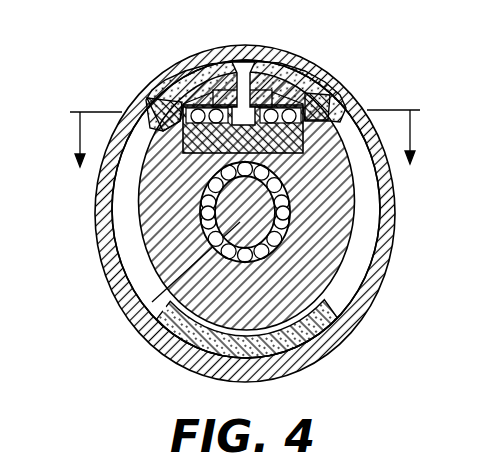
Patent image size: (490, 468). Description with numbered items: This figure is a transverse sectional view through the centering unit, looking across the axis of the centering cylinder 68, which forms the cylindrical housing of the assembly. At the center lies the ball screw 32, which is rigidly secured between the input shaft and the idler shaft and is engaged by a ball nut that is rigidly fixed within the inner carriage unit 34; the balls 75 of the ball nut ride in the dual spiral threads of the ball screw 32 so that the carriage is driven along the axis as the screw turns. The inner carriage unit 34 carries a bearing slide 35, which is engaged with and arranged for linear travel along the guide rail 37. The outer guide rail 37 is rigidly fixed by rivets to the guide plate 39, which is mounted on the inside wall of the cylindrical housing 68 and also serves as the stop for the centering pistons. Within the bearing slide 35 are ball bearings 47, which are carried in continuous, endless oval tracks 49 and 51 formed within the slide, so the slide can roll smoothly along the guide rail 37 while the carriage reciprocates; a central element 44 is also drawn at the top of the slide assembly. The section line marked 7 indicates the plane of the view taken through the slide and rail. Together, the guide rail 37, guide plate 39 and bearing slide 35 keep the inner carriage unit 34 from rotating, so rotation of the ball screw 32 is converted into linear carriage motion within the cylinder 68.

The section line 7- 7 is at (247, 130).
The ball screw 32 is at (140, 318).
The inner carriage unit 34 is at (341, 312).
The bearing slide 35 is at (303, 142).
The guide rail 37 is at (196, 82).
The guide plate 39 is at (294, 357).
The pin 44 is at (258, 64).
The ball bearings 47 is at (302, 108).
The oval track 49 is at (157, 102).
The oval track 51 is at (293, 98).
The centering cylinder 68 is at (316, 358).
The balls 75 is at (285, 212).